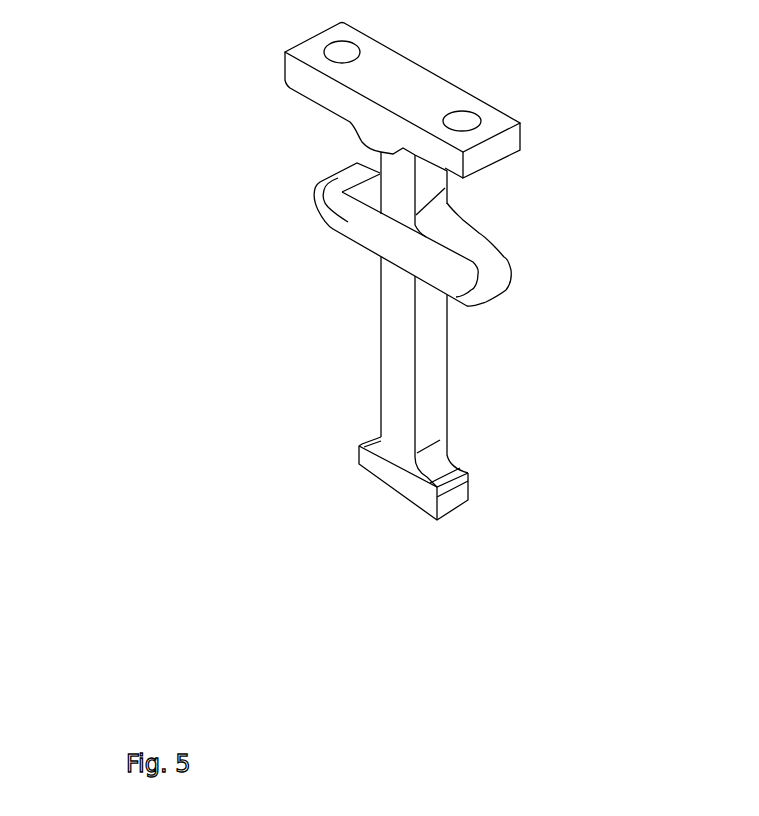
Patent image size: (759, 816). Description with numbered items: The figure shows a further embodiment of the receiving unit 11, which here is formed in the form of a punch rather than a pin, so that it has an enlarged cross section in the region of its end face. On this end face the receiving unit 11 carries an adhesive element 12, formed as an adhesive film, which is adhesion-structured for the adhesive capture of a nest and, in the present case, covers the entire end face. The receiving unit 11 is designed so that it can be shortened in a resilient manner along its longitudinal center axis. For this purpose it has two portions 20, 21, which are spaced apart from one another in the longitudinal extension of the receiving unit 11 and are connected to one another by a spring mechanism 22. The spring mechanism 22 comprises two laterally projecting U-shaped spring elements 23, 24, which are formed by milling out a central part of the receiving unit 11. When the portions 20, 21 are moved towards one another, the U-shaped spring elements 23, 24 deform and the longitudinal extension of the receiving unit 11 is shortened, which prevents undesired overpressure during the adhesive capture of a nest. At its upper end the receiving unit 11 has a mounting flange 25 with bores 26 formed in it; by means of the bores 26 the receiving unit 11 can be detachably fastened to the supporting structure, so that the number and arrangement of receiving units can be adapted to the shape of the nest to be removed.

The receiving unit 11 is at (505, 372).
The adhesive element 12 is at (450, 503).
The portion 20 is at (432, 176).
The portion 21 is at (428, 384).
The spring mechanism 22 is at (515, 222).
The U-shaped spring element 23 is at (487, 272).
The U-shaped spring element 24 is at (333, 193).
The mounting flange 25 is at (360, 77).
The bore 26 is at (342, 52).